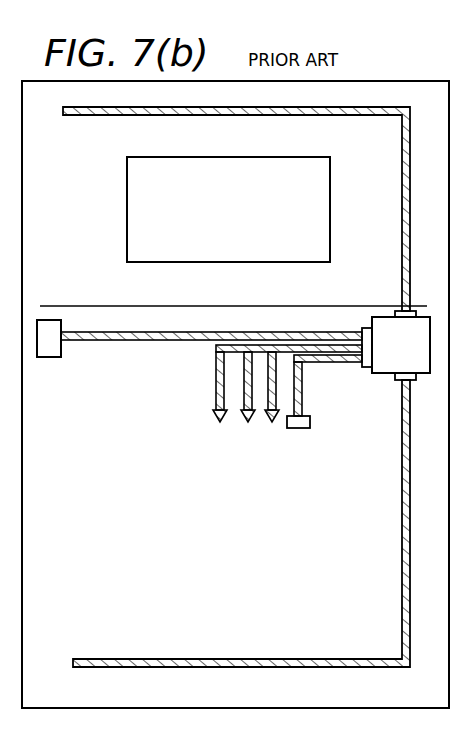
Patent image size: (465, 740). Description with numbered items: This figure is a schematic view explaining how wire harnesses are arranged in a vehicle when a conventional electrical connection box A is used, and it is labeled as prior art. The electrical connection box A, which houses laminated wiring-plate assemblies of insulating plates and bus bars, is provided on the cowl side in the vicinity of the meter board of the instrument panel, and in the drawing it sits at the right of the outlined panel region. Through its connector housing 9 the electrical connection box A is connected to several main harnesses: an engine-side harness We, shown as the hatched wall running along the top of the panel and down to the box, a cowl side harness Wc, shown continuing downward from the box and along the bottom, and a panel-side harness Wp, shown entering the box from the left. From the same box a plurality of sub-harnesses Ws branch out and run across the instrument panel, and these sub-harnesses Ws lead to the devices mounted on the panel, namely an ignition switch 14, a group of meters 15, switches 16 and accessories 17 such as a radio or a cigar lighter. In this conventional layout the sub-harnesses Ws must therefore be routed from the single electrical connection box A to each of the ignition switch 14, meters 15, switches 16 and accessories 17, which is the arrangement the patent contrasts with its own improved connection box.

The engine-side harness We is at (402, 140).
The cowl side harness Wc is at (402, 531).
The panel-side harness Wp is at (98, 341).
The sub-harnesses Ws is at (259, 408).
The connector housing 9 is at (397, 312).
The electrical connection box A is at (383, 368).
The ignition switch 14 is at (302, 430).
The group of meters 15 is at (275, 425).
The switches 16 is at (249, 425).
The accessories 17 is at (219, 425).